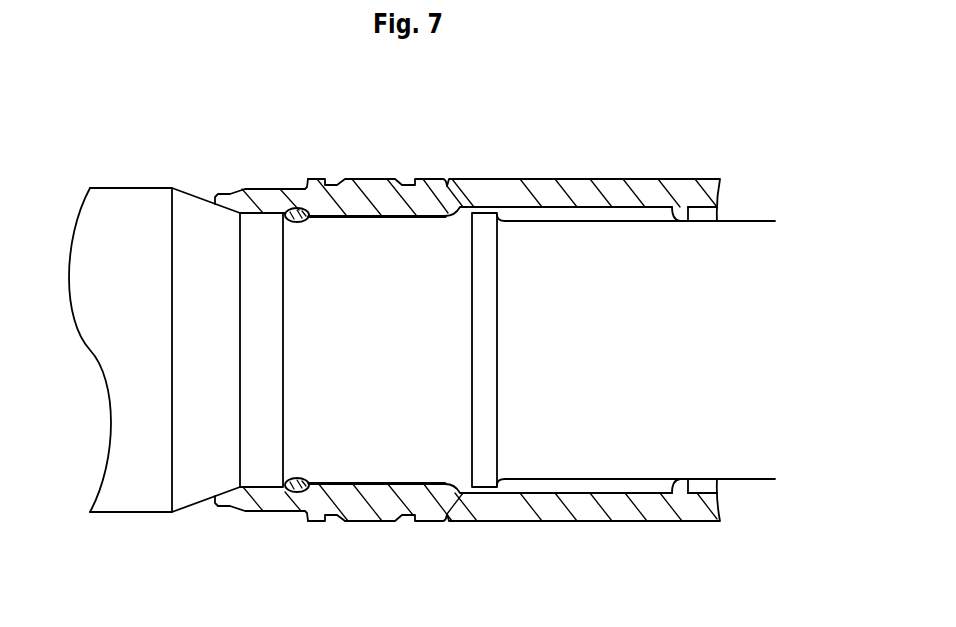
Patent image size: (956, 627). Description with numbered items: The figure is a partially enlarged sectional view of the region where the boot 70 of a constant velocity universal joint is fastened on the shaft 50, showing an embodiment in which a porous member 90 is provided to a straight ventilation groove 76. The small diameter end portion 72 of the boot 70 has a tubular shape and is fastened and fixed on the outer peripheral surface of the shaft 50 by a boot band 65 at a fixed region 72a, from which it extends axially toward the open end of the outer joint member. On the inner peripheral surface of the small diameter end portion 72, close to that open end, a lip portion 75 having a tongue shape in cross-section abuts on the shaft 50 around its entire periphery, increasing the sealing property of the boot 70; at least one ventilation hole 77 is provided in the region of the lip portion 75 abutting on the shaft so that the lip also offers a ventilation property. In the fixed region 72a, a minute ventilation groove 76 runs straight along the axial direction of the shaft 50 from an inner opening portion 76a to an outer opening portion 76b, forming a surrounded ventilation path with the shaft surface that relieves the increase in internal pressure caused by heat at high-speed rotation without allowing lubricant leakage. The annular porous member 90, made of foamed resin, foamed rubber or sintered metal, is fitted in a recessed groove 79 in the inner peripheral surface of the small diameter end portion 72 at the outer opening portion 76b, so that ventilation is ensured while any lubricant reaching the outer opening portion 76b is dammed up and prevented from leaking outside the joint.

The shaft 50 is at (139, 528).
The boot 70 is at (495, 343).
The small diameter end portion 72 is at (544, 193).
The fixed region 72a is at (358, 495).
The lip portion 75 is at (672, 226).
The ventilation groove 76 is at (385, 217).
The inner opening portion 76a is at (460, 220).
The outer opening portion 76b is at (295, 222).
The ventilation hole 77 is at (683, 478).
The recessed groove 79 is at (288, 208).
The porous member 90 is at (284, 497).
The boot band 65 is at (400, 515).